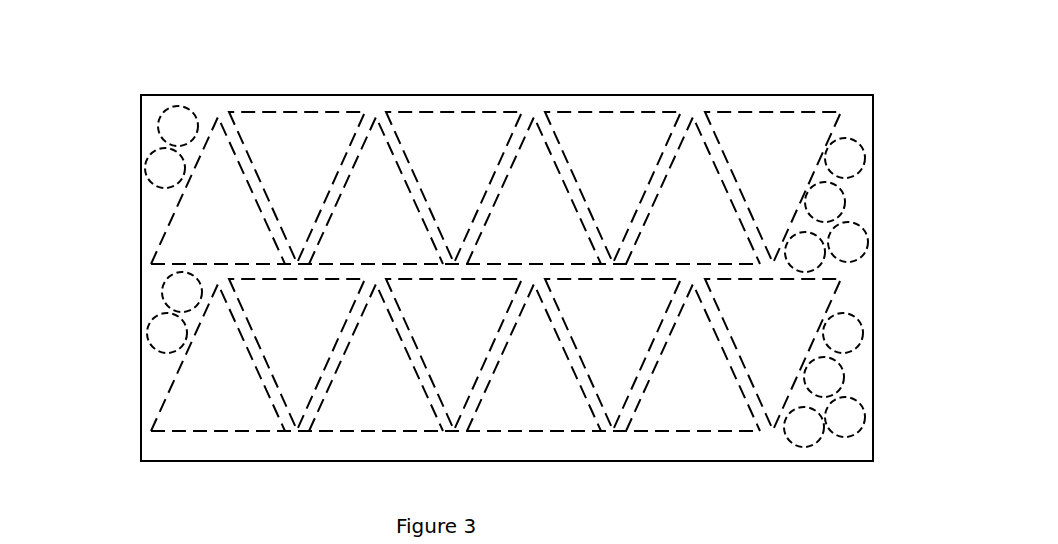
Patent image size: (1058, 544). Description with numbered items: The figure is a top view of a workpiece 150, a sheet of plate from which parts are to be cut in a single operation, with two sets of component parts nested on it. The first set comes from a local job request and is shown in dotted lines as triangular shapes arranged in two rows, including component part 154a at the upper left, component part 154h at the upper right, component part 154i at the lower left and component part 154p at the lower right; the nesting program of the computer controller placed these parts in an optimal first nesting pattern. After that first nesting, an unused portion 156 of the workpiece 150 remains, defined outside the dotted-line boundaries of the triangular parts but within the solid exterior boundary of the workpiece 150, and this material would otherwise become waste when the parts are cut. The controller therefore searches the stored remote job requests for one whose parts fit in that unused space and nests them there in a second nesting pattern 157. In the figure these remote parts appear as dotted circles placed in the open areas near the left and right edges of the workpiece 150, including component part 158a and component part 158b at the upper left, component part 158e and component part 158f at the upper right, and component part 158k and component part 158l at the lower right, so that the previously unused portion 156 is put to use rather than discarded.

The workpiece 150 is at (418, 95).
The component part 154a is at (230, 210).
The component part 154h is at (780, 143).
The component part 154i is at (232, 408).
The component part 154p is at (770, 385).
The unused portion 156 is at (853, 282).
The second nesting pattern 157 is at (760, 76).
The component part 158a is at (174, 127).
The component part 158b is at (165, 168).
The component part 158e is at (845, 158).
The component part 158f is at (830, 203).
The component part 158k is at (845, 417).
The component part 158l is at (805, 428).